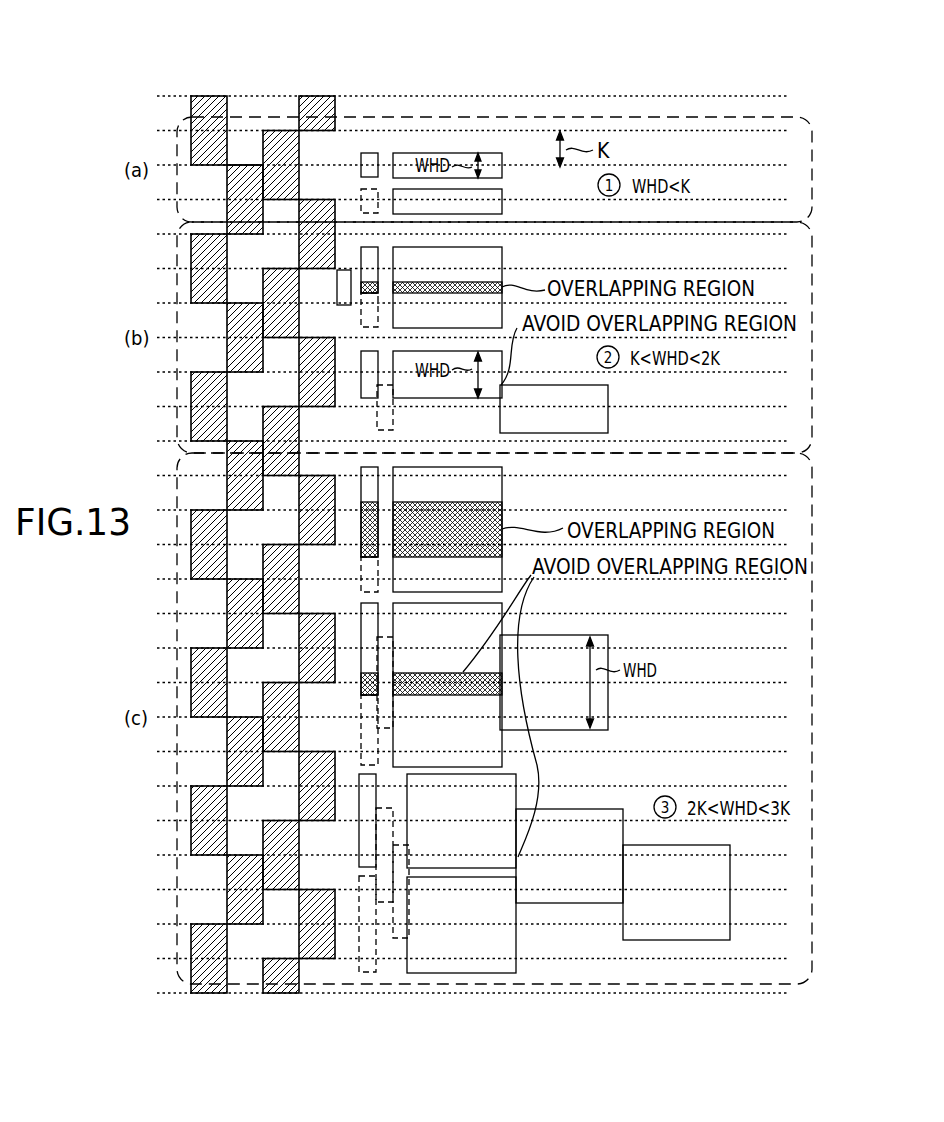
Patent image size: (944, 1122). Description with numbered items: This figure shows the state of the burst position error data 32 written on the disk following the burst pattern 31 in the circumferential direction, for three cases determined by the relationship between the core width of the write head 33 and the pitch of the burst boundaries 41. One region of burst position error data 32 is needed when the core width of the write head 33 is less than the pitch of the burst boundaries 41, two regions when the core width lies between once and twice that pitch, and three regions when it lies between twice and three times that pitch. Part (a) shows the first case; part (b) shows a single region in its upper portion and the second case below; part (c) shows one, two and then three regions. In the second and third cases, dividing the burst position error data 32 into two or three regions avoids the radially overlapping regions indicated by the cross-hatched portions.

The burst pattern 31 is at (212, 76).
The burst position error data 32 is at (503, 76).
The write head 33 is at (360, 156).
The burst boundary 41 is at (247, 165).